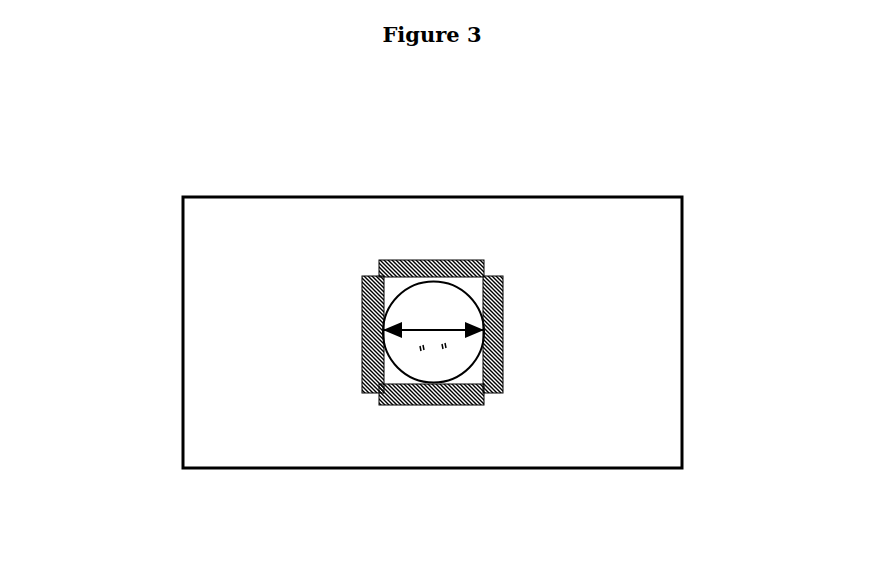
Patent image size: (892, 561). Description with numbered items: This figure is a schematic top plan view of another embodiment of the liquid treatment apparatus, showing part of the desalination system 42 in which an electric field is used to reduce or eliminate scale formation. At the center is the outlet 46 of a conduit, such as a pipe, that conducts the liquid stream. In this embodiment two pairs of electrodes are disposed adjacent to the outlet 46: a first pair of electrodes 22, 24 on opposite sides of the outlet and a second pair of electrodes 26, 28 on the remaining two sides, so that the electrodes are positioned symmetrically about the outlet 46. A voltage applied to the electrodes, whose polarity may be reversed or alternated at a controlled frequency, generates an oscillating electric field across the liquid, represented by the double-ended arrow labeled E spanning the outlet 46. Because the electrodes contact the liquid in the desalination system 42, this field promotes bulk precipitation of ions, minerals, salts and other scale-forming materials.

The electrode 22 is at (367, 392).
The electrode 24 is at (492, 270).
The electrode 26 is at (460, 406).
The electrode 28 is at (445, 259).
The desalination system 42 is at (657, 322).
The outlet 46 is at (417, 317).